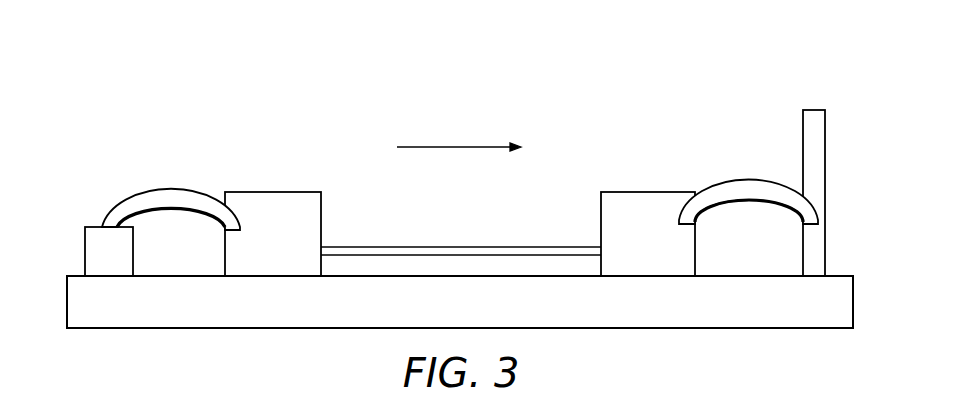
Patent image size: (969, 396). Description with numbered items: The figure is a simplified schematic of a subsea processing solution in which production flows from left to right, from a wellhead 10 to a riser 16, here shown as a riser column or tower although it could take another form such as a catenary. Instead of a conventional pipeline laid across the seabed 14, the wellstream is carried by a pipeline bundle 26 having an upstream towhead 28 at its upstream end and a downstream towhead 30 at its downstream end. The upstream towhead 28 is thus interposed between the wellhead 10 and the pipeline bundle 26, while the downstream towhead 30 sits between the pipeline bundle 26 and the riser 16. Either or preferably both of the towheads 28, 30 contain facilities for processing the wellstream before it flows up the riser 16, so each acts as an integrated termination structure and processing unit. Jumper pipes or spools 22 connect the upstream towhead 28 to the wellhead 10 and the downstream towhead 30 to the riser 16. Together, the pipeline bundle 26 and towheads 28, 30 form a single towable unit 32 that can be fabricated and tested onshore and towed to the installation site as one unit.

The wellhead 10 is at (97, 262).
The seabed 14 is at (448, 311).
The riser 16 is at (813, 118).
The jumper pipes or spools 22 is at (170, 192).
The pipeline bundle 26 is at (461, 253).
The upstream towhead 28 is at (261, 245).
The downstream towhead 30 is at (636, 243).
The towable unit 32 is at (460, 197).